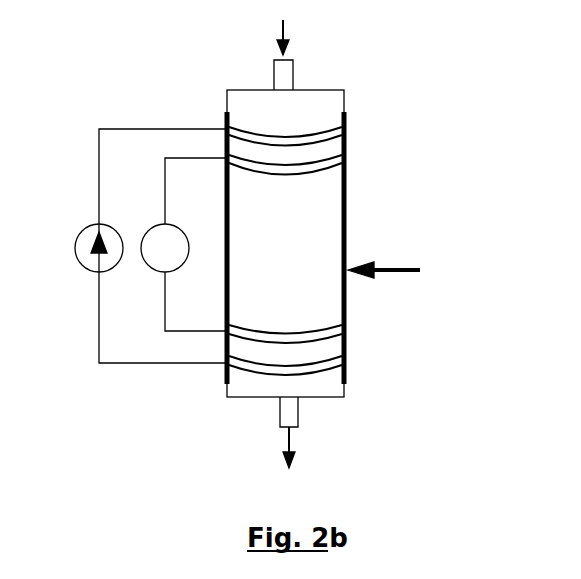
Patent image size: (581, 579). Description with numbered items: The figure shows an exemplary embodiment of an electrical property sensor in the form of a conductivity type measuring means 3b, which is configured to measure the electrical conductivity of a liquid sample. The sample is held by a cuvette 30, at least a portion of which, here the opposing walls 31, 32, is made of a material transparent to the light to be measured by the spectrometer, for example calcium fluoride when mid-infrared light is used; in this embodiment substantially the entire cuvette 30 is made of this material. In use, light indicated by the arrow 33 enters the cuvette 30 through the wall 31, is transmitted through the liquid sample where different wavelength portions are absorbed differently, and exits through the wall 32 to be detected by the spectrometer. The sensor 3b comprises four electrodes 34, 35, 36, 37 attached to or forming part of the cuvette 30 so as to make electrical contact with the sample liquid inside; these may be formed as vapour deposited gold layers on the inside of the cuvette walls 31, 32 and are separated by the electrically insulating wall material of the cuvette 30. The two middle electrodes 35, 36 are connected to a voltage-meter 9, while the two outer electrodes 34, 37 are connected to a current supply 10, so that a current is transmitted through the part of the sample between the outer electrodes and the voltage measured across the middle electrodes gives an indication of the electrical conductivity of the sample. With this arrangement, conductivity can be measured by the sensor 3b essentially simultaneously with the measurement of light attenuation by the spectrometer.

The electrical conductivity type measuring means 3b is at (119, 268).
The voltage-meter 9 is at (175, 230).
The current supply 10 is at (110, 230).
The cuvette 30 is at (397, 244).
The wall 31 is at (342, 210).
The wall 32 is at (231, 255).
The arrow 33 is at (384, 260).
The electrode 34 is at (347, 126).
The electrode 35 is at (347, 155).
The electrode 36 is at (347, 325).
The electrode 37 is at (347, 356).